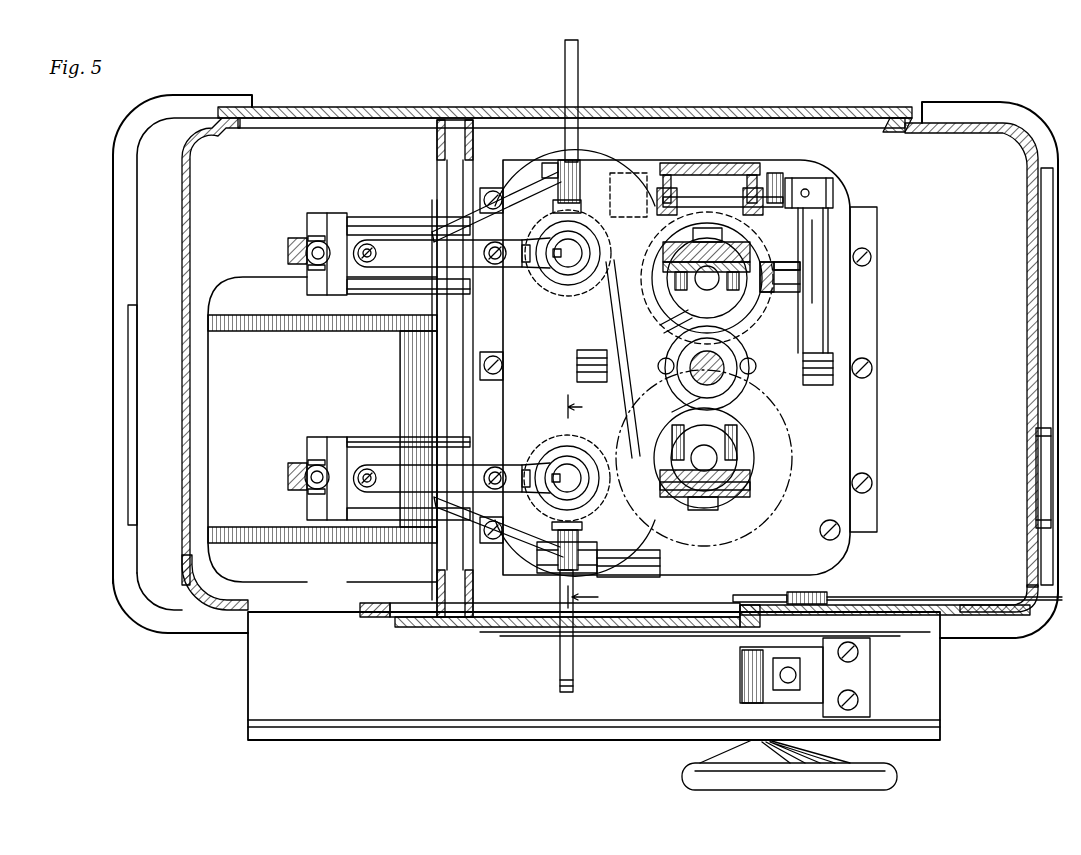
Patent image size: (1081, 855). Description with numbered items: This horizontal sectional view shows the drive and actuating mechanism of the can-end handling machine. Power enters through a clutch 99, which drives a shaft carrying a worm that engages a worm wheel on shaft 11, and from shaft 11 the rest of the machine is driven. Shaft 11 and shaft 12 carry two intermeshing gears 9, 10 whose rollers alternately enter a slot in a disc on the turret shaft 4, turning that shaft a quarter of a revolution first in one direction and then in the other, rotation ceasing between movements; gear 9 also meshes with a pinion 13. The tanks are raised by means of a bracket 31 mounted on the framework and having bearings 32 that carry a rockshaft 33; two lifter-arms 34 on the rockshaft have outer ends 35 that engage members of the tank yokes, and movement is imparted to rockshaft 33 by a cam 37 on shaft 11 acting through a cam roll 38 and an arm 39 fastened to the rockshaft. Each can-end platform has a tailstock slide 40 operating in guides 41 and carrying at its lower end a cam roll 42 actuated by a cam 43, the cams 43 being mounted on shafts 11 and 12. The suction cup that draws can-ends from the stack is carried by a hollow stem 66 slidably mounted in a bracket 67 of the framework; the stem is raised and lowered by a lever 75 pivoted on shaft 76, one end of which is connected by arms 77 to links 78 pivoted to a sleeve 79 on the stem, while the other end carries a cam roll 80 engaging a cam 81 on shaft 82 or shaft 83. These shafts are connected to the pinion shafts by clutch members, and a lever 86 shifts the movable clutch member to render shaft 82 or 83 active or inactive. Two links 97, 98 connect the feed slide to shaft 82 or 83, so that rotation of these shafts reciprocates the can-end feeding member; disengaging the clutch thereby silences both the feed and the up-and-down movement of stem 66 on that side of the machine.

The shaft 4 is at (735, 375).
The gear 9 is at (783, 318).
The gear 10 is at (795, 432).
The shaft 11 is at (703, 290).
The shaft 12 is at (710, 450).
The pinion 13 is at (597, 495).
The bracket 31 is at (736, 163).
The bearings 32 is at (662, 188).
The rockshaft 33 is at (704, 165).
The lifter-arms 34 is at (622, 290).
The outer ends 35 is at (576, 366).
The cam 37 is at (810, 335).
The cam roll 38 is at (795, 285).
The arm 39 is at (760, 218).
The slide 40 is at (772, 268).
The guides 41 is at (805, 245).
The cam roll 42 is at (790, 180).
The cam 43 is at (668, 320).
The hollow stem 66 is at (312, 243).
The bracket 67 is at (578, 55).
The lever 75 is at (528, 197).
The shaft 76 is at (445, 350).
The arms 77 is at (375, 217).
The links 78 is at (307, 283).
The sleeve 79 is at (322, 241).
The cam roll 80 is at (592, 208).
The cam 81 is at (540, 282).
The shaft 82 is at (568, 260).
The shaft 83 is at (573, 478).
The lever 86 is at (573, 668).
The link 97 is at (452, 365).
The link 98 is at (556, 270).
The clutch 99 is at (745, 685).